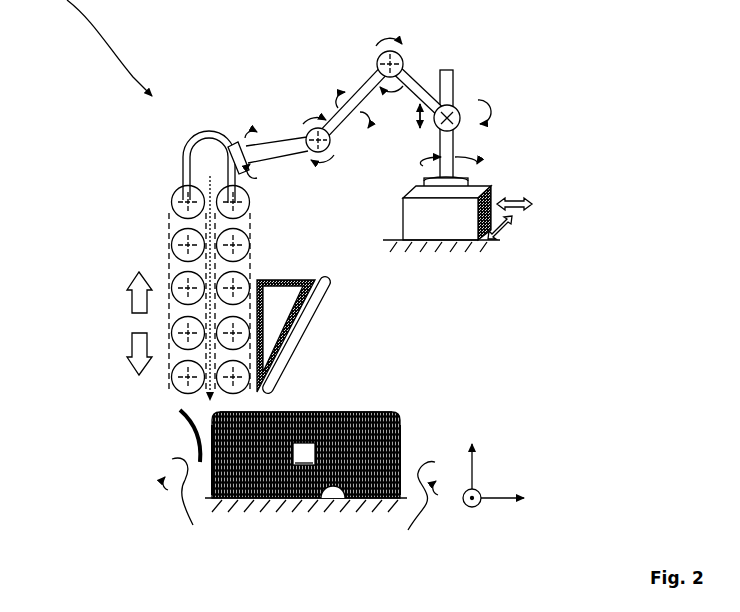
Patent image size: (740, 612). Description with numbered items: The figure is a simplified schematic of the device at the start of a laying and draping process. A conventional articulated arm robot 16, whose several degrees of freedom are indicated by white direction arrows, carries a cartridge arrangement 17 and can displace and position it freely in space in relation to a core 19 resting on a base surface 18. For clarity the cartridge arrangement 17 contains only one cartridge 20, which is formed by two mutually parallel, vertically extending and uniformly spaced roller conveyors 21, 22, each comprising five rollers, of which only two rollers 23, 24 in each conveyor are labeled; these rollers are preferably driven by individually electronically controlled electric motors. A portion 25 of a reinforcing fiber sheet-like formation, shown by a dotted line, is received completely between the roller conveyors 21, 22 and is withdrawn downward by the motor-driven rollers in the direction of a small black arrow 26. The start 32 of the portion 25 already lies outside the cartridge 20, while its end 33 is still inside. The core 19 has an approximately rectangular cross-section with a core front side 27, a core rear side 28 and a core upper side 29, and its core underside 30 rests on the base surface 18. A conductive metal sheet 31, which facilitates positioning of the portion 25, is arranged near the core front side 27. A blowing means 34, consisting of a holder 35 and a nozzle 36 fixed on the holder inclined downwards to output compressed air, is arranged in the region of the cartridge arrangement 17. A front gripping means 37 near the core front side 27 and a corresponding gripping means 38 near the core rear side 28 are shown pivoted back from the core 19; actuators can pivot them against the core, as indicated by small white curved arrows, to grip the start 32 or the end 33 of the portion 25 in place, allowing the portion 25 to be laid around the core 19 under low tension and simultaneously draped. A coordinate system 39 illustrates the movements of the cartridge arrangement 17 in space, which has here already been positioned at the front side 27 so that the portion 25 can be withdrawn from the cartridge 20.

The articulated arm robot 16 is at (448, 68).
The cartridge arrangement 17 is at (150, 158).
The base surface 18 is at (500, 241).
The core 19 is at (306, 455).
The cartridge 20 is at (215, 394).
The roller conveyor 21 is at (170, 240).
The roller conveyor 22 is at (178, 262).
The roller 23 is at (176, 197).
The roller 24 is at (250, 206).
The portion 25 is at (180, 318).
The arrow 26 is at (209, 160).
The core front side 27 is at (222, 452).
The core rear side 28 is at (391, 442).
The core upper side 29 is at (342, 400).
The core underside 30 is at (345, 505).
The conductive metal sheet 31 is at (193, 438).
The start 32 is at (200, 376).
The end 33 is at (208, 175).
The blowing means 34 is at (303, 259).
The holder 35 is at (293, 320).
The nozzle 36 is at (318, 298).
The front gripping means 37 is at (180, 503).
The gripping means 38 is at (436, 512).
The coordinate system 39 is at (475, 508).